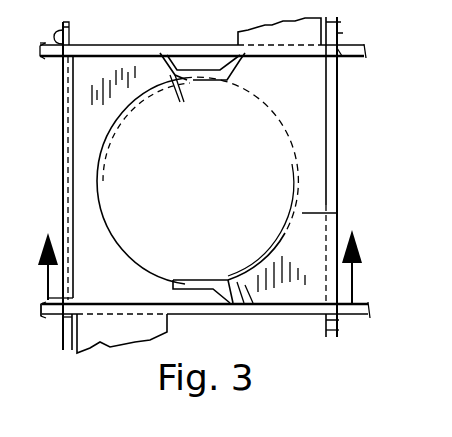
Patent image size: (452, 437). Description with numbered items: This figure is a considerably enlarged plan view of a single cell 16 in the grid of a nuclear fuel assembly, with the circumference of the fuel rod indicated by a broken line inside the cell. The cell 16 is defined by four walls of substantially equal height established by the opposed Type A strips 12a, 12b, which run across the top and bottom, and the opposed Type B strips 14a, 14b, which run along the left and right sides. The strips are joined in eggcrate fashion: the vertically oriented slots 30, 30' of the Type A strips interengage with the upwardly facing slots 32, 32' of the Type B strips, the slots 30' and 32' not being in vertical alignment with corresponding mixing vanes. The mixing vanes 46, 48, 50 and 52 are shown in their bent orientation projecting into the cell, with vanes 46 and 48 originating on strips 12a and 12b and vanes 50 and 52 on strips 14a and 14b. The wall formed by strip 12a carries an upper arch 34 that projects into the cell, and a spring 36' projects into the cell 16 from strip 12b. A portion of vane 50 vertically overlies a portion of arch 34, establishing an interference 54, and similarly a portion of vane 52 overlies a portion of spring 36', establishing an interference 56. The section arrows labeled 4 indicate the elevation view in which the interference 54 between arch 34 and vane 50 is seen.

The Type A grid strip 12a is at (177, 40).
The Type A grid strip 12b is at (309, 325).
The Type B grid strip 14a is at (58, 148).
The Type B grid strip 14b is at (343, 143).
The cell 16 is at (258, 195).
The slot 30 is at (228, 205).
The slot 30' is at (228, 182).
The slot 32 is at (219, 163).
The slot 32' is at (210, 234).
The upper arch 34 is at (185, 108).
The spring 36' is at (216, 314).
The mixing vane 46 is at (340, 22).
The mixing vane 48 is at (104, 342).
The mixing vane 50 is at (78, 87).
The mixing vane 52 is at (308, 212).
The interference 54 is at (169, 100).
The interference 56 is at (243, 303).
The section line 4- 4 is at (198, 249).